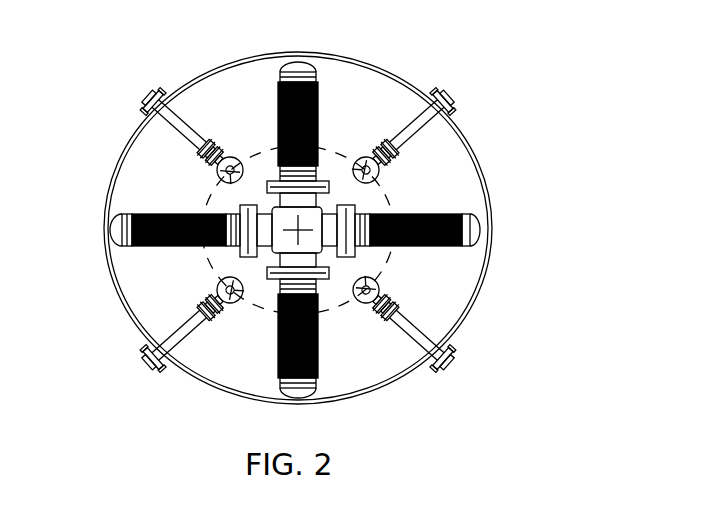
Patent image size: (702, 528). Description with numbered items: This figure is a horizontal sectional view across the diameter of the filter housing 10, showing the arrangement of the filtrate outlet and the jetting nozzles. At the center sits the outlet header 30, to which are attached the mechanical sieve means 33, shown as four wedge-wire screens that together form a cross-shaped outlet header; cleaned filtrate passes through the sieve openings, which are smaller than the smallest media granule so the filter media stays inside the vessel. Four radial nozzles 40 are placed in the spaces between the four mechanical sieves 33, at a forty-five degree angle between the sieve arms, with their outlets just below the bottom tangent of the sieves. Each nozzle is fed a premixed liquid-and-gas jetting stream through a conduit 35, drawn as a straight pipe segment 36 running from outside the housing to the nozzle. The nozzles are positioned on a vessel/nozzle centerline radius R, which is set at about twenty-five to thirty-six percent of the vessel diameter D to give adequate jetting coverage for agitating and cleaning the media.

The drum housing 10 is at (371, 68).
The outlet header 30 is at (273, 249).
The mechanical sieve means 33 is at (445, 208).
The conduit 35 is at (137, 104).
The branch pipe 36 is at (188, 122).
The radial nozzles 40 is at (214, 174).
The vessel/nozzle centerline radius R is at (378, 173).
The vessel diameter D is at (82, 332).